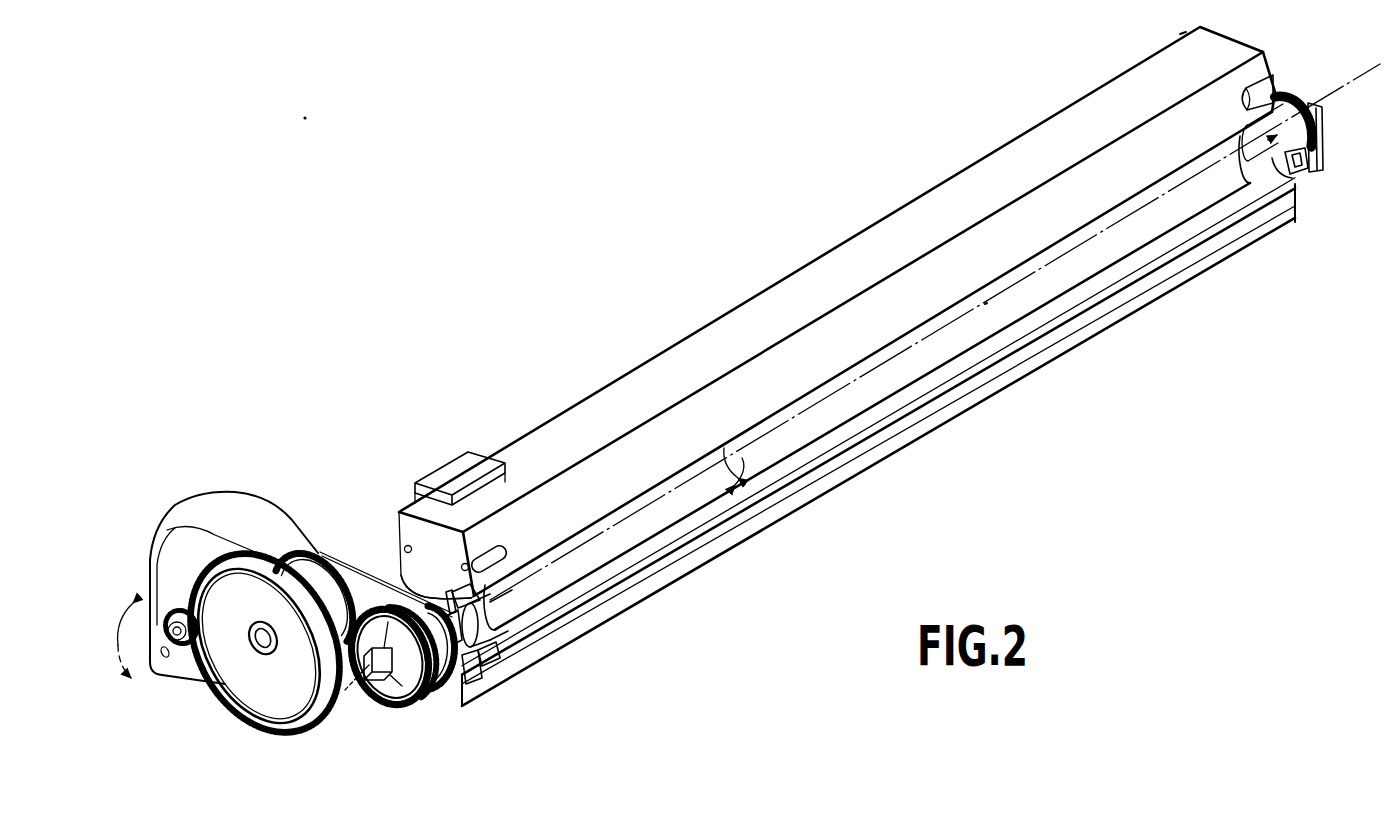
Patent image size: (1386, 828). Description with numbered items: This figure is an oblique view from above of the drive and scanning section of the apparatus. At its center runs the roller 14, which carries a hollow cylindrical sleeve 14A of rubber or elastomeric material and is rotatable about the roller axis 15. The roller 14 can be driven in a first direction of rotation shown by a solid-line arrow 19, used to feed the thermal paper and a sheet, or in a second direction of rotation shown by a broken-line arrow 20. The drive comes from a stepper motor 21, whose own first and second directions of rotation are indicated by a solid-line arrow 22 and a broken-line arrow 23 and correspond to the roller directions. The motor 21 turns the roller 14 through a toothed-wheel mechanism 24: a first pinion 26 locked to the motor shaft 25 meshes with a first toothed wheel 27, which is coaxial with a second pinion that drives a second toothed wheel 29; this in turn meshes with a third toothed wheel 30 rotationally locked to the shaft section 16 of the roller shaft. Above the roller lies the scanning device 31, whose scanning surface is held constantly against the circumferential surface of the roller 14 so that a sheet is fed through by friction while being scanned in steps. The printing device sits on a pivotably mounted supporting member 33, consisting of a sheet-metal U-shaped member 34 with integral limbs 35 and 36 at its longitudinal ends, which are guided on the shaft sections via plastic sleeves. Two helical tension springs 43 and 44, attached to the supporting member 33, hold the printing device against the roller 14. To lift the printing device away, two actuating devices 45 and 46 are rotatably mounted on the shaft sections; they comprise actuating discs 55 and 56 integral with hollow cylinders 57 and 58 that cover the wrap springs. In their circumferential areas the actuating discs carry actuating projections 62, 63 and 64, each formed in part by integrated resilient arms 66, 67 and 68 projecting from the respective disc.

The roller 14 is at (1148, 259).
The hollow cylindrical sleeve 14A is at (924, 369).
The roller axis 15 is at (968, 314).
The shaft section 16 is at (368, 695).
The first direction of rotation of the roller 19 is at (686, 498).
The second direction of rotation of the roller 20 is at (760, 466).
The motor 21 is at (233, 510).
The first direction of rotation of the motor 22 is at (147, 668).
The second direction of rotation of the motor 23 is at (108, 612).
The toothed-wheel mechanism 24 is at (343, 728).
The motor shaft 25 is at (176, 638).
The first pinion 26 is at (190, 612).
The first toothed wheel 27 is at (273, 701).
The second toothed wheel 29 is at (318, 552).
The third toothed wheel 30 is at (396, 708).
The scanning device 31 is at (754, 290).
The supporting member 33 is at (1108, 335).
The U-shaped member 34 is at (879, 434).
The limb 35 is at (393, 597).
The limb 36 is at (1326, 111).
The helical tension spring 43 is at (436, 690).
The helical tension spring 44 is at (1290, 95).
The actuating device 45 is at (503, 641).
The actuating device 46 is at (1268, 190).
The actuating disc 55 is at (471, 588).
The actuating disc 56 is at (1270, 160).
The hollow cylinder 57 is at (486, 613).
The hollow cylinder 58 is at (1262, 126).
The actuating projection 62 is at (493, 652).
The actuating projection 63 is at (414, 600).
The actuating projection 64 is at (1305, 177).
The resilient arm 66 is at (484, 658).
The resilient arm 67 is at (405, 597).
The resilient arm 68 is at (1293, 172).